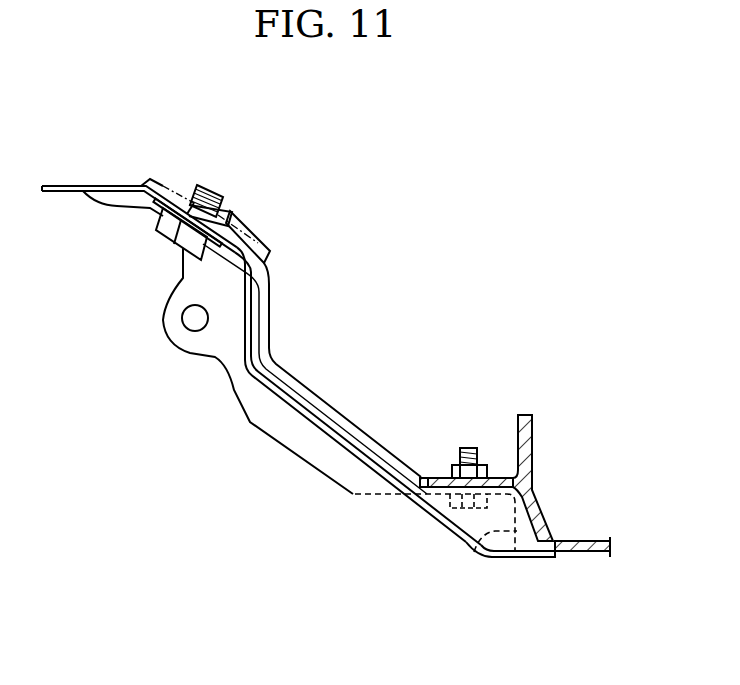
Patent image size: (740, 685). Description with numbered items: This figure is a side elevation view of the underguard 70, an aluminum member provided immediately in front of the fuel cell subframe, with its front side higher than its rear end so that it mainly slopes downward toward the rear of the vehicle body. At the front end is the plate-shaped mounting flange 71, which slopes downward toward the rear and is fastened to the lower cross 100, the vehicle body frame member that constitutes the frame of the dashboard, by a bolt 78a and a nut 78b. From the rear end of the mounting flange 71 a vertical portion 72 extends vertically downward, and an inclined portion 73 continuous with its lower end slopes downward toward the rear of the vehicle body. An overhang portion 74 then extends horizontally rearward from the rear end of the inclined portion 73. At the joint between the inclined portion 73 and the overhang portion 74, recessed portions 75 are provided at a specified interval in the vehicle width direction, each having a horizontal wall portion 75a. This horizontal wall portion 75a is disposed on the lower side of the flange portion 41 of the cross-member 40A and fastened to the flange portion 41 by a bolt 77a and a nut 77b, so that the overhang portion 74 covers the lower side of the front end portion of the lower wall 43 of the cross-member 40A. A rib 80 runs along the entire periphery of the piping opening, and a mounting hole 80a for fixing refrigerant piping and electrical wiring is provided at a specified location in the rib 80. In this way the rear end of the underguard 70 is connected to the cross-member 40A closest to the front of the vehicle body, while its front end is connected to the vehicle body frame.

The lower cross 100 is at (146, 180).
The nut 78b is at (203, 182).
The mounting flange 71 is at (250, 237).
The bolt 78a is at (177, 250).
The mounting hole 80a is at (193, 321).
The vertical portion 72 is at (243, 337).
The underguard 70 is at (319, 417).
The rib 80 is at (214, 372).
The inclined portion 73 is at (343, 452).
The flange portion 41 is at (425, 478).
The nut 77b is at (450, 474).
The bolt 77a is at (468, 450).
The cross-member 40A is at (502, 476).
The horizontal wall portion 75a is at (430, 507).
The recessed portion 75 is at (475, 550).
The overhang portion 74 is at (537, 557).
The lower wall 43 is at (590, 553).